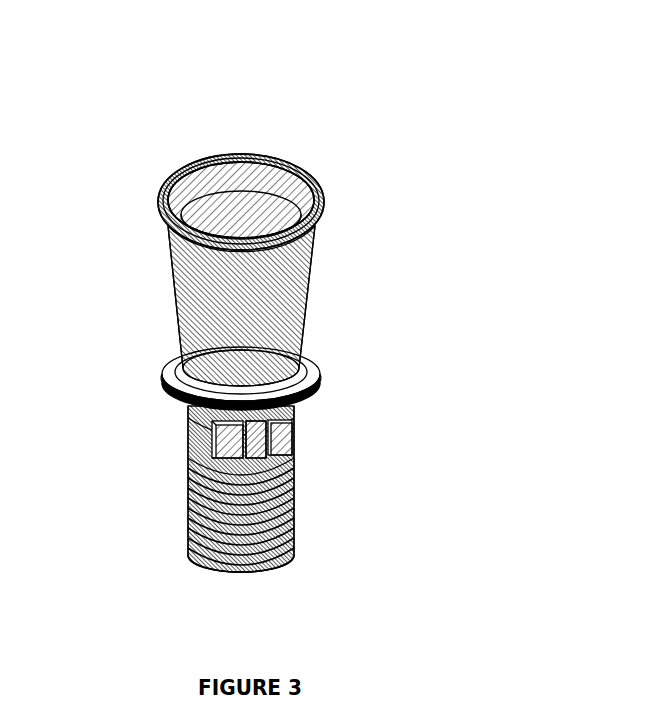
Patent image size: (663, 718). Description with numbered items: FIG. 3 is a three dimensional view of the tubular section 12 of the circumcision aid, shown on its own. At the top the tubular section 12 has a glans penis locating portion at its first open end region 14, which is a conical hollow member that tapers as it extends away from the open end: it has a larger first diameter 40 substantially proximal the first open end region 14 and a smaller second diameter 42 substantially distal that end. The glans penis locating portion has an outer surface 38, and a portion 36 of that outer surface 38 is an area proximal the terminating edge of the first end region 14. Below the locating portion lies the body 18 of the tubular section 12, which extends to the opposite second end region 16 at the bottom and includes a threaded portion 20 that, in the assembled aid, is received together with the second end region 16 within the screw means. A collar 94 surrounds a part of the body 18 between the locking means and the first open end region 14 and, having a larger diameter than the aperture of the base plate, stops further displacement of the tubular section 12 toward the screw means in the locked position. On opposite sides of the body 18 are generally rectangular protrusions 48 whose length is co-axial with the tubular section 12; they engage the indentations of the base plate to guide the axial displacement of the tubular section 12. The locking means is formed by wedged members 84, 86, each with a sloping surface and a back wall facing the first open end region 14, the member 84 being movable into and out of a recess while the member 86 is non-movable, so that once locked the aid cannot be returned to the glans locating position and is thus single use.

The tubular section 12 is at (247, 320).
The first open end region 14 is at (245, 216).
The first diameter 40 is at (178, 172).
The second diameter 42 is at (162, 204).
The outer surface 38 is at (304, 287).
The portion of the outer surface 36 is at (270, 266).
The flange 94 is at (170, 350).
The movable wedged member 84 is at (184, 411).
The non-movable wedged member 86 is at (188, 478).
The protrusions 48 is at (288, 430).
The body 18 is at (293, 483).
The threaded portion 20 is at (293, 527).
The second end region 16 is at (208, 572).